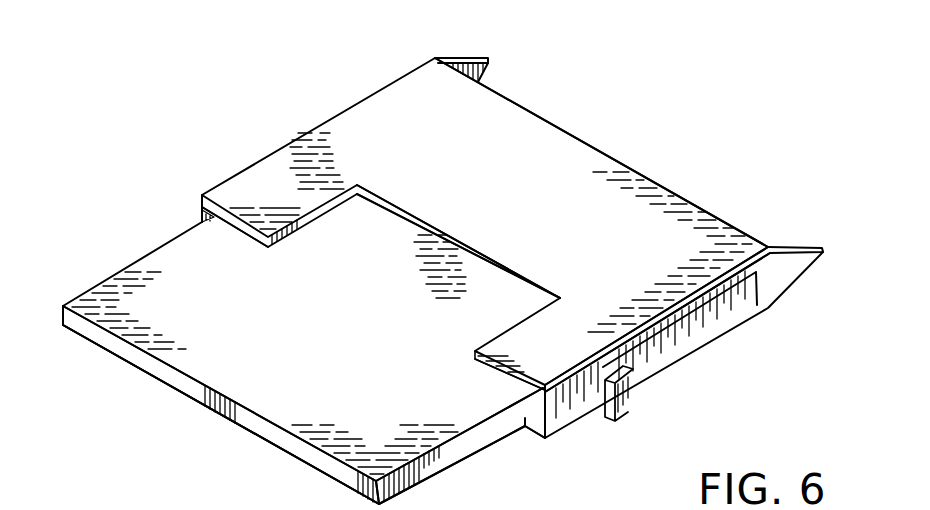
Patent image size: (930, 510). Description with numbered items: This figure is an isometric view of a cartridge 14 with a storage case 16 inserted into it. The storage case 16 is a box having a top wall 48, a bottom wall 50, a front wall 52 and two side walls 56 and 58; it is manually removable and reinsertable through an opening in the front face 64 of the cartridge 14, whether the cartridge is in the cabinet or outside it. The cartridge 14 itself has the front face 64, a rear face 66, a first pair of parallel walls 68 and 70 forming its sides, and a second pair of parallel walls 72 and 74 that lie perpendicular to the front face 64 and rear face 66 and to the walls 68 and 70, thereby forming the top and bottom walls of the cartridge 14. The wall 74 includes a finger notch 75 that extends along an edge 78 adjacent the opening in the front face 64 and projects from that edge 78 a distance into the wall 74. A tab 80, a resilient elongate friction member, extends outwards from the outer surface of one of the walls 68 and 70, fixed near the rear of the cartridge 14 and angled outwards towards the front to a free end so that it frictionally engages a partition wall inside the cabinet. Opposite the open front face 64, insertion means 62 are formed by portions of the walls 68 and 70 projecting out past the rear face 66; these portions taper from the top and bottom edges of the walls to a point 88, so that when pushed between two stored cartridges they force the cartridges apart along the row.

The cartridge 14 is at (345, 110).
The storage case 16 is at (265, 392).
The top wall 48 is at (207, 398).
The bottom wall 50 is at (120, 360).
The front wall 52 is at (291, 452).
The side wall 56 is at (57, 312).
The side wall 58 is at (457, 452).
The insertion means 62 is at (466, 48).
The front face 64 is at (199, 218).
The rear face 66 is at (551, 118).
The first parallel wall 68 is at (198, 197).
The first parallel wall 70 is at (617, 358).
The second parallel wall 72 is at (525, 432).
The second parallel wall 74 is at (578, 174).
The finger notch 75 is at (388, 203).
The edge 78 is at (251, 229).
The tab 80 is at (650, 383).
The point 88 is at (497, 60).